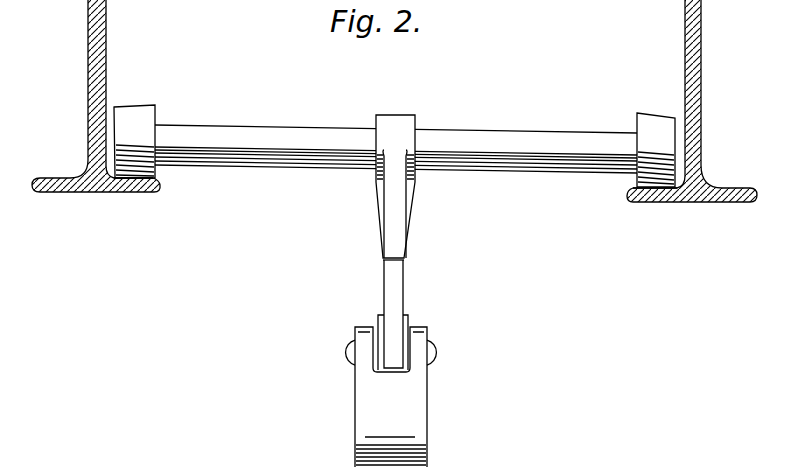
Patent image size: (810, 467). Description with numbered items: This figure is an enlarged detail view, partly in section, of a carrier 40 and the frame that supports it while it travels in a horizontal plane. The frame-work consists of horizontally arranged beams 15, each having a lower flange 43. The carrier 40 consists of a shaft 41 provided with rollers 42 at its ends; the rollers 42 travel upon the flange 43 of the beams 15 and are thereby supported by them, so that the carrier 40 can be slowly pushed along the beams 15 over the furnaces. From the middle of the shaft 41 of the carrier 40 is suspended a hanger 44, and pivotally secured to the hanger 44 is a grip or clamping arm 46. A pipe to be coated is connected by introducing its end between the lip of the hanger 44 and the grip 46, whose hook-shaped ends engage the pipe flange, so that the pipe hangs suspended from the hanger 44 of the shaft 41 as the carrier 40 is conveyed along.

The beam 15 is at (106, 44).
The carrier 40 is at (321, 124).
The shaft 41 is at (477, 137).
The roller 42 is at (138, 113).
The flange 43 is at (133, 186).
The hanger 44 is at (395, 285).
The grip or clamping arm 46 is at (418, 405).